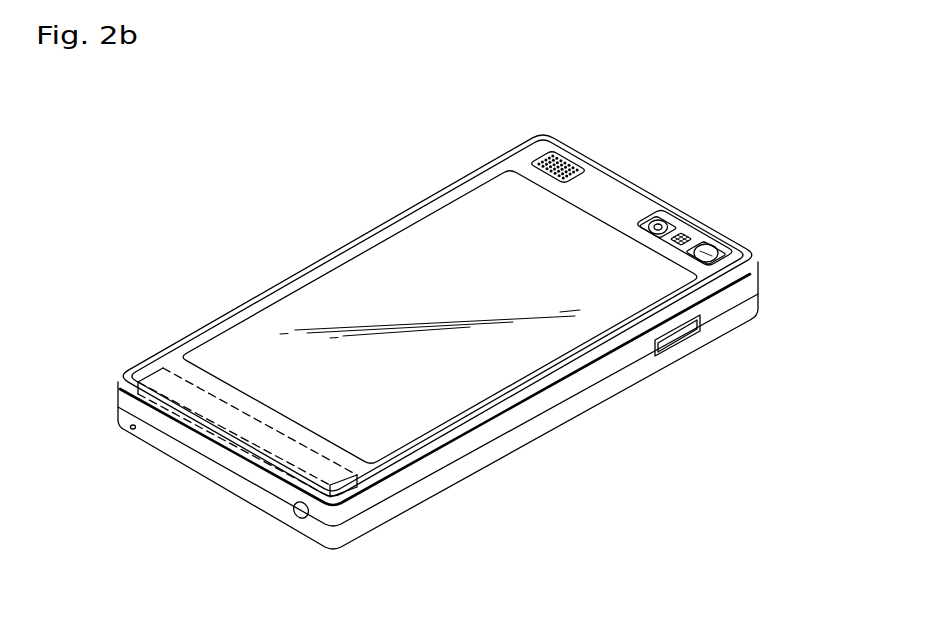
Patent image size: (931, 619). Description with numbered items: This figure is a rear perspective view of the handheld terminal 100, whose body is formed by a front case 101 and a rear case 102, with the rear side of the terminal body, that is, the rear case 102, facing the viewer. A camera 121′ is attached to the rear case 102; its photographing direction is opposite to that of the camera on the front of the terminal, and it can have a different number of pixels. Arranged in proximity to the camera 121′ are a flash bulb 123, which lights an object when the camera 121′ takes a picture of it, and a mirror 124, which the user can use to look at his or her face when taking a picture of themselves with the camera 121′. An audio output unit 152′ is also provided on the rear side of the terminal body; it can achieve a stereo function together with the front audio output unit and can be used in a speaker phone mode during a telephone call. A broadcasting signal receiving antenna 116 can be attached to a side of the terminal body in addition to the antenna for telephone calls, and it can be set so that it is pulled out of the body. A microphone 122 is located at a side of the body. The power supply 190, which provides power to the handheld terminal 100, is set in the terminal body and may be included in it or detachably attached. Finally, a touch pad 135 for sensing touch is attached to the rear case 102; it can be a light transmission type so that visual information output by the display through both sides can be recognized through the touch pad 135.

The handheld terminal 100 is at (404, 188).
The front case 101 is at (753, 302).
The rear case 102 is at (752, 277).
The broadcasting signal receiving antenna 116 is at (295, 517).
The camera 121′ is at (661, 228).
The microphone 122 is at (130, 431).
The flash bulb 123 is at (688, 240).
The mirror 124 is at (707, 255).
The touch pad 135 is at (343, 281).
The audio output unit 152′ is at (567, 162).
The power supply 190 is at (155, 372).